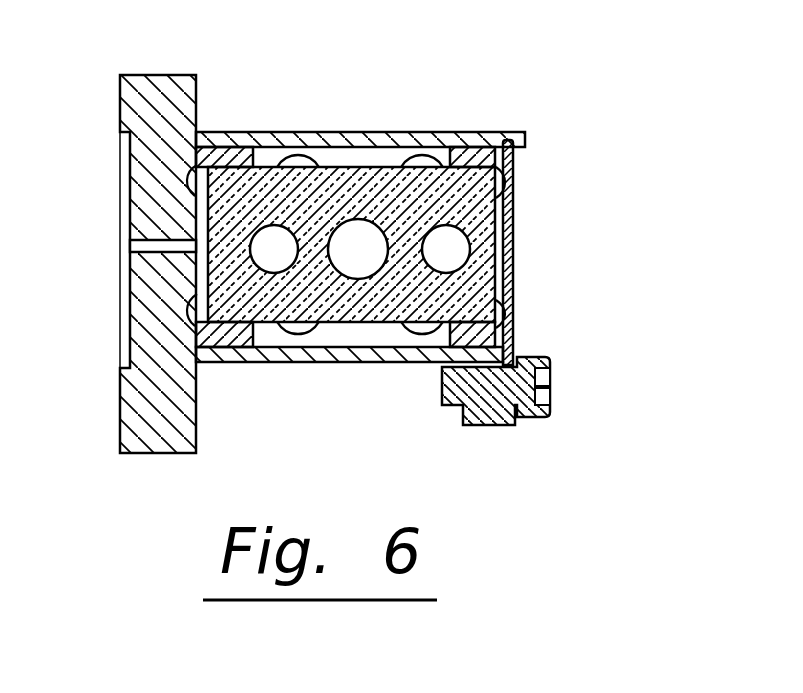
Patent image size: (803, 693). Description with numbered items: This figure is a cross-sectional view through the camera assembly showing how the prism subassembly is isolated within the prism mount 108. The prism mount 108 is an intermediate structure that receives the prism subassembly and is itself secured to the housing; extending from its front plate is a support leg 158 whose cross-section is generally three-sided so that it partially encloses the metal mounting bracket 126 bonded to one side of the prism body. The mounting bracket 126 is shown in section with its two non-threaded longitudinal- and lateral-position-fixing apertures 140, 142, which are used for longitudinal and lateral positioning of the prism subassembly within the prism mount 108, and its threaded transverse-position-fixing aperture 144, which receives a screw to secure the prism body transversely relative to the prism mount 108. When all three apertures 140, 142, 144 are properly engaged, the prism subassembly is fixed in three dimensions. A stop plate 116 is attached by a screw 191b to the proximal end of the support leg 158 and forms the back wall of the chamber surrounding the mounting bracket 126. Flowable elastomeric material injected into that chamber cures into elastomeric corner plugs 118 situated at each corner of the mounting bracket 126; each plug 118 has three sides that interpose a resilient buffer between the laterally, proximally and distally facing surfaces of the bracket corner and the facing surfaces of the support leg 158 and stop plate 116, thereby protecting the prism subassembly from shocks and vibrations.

The prism mount 108 is at (172, 80).
The stop plate 116 is at (507, 200).
The elastomeric corner plug 118 is at (197, 174).
The mounting bracket 126 is at (355, 177).
The longitudinal- and lateral-position-fixing aperture 140 is at (458, 253).
The longitudinal- and lateral-position-fixing aperture 142 is at (263, 255).
The transverse-position-fixing aperture 144 is at (362, 263).
The support leg 158 is at (455, 135).
The screw 191b is at (537, 357).